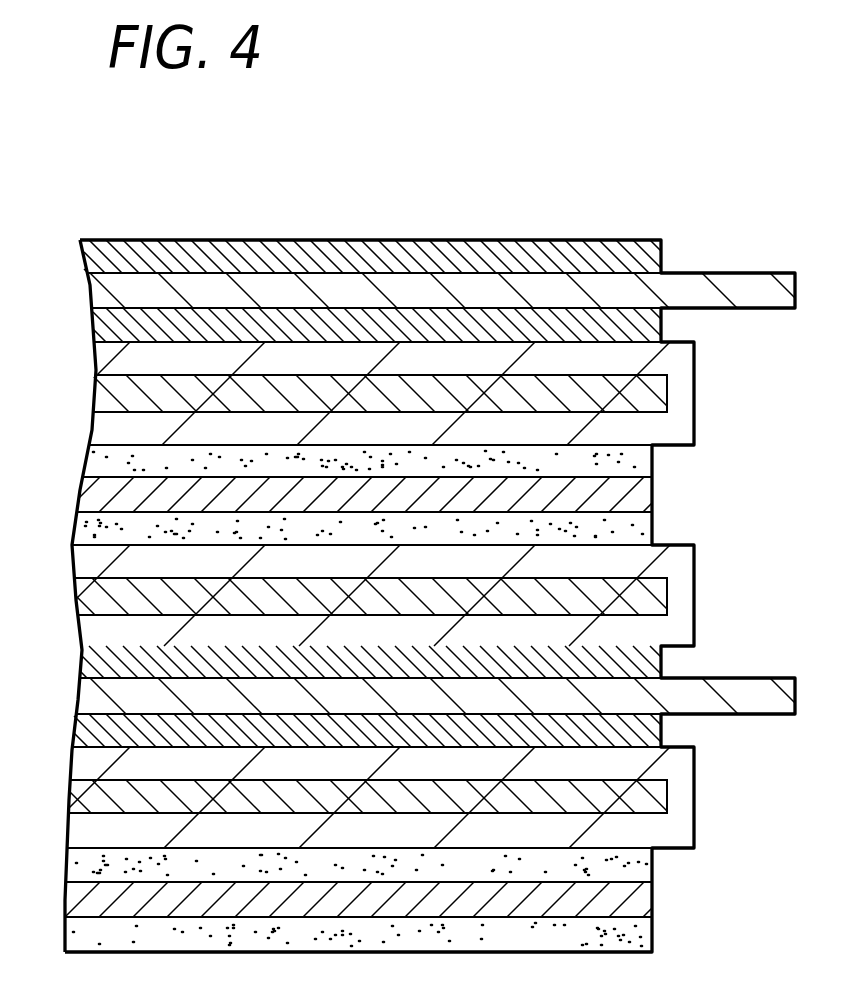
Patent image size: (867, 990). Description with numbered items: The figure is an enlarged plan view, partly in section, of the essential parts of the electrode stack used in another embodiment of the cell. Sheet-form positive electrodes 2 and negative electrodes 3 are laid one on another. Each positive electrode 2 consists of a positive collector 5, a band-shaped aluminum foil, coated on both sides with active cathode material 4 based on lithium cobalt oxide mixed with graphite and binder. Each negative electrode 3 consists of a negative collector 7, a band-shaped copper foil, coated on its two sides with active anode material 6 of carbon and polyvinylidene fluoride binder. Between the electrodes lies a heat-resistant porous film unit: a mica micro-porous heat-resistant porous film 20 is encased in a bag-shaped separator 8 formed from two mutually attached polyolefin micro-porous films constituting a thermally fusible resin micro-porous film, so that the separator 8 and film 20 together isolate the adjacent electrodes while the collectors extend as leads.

The positive electrode 2 is at (58, 443).
The negative electrode 3 is at (58, 237).
The active cathode material 4 is at (628, 462).
The positive collector 5 is at (627, 500).
The active anode material 6 is at (640, 250).
The negative collector 7 is at (723, 287).
The bag-shaped separator 8 is at (673, 362).
The heat-resistant porous film 20 is at (643, 393).